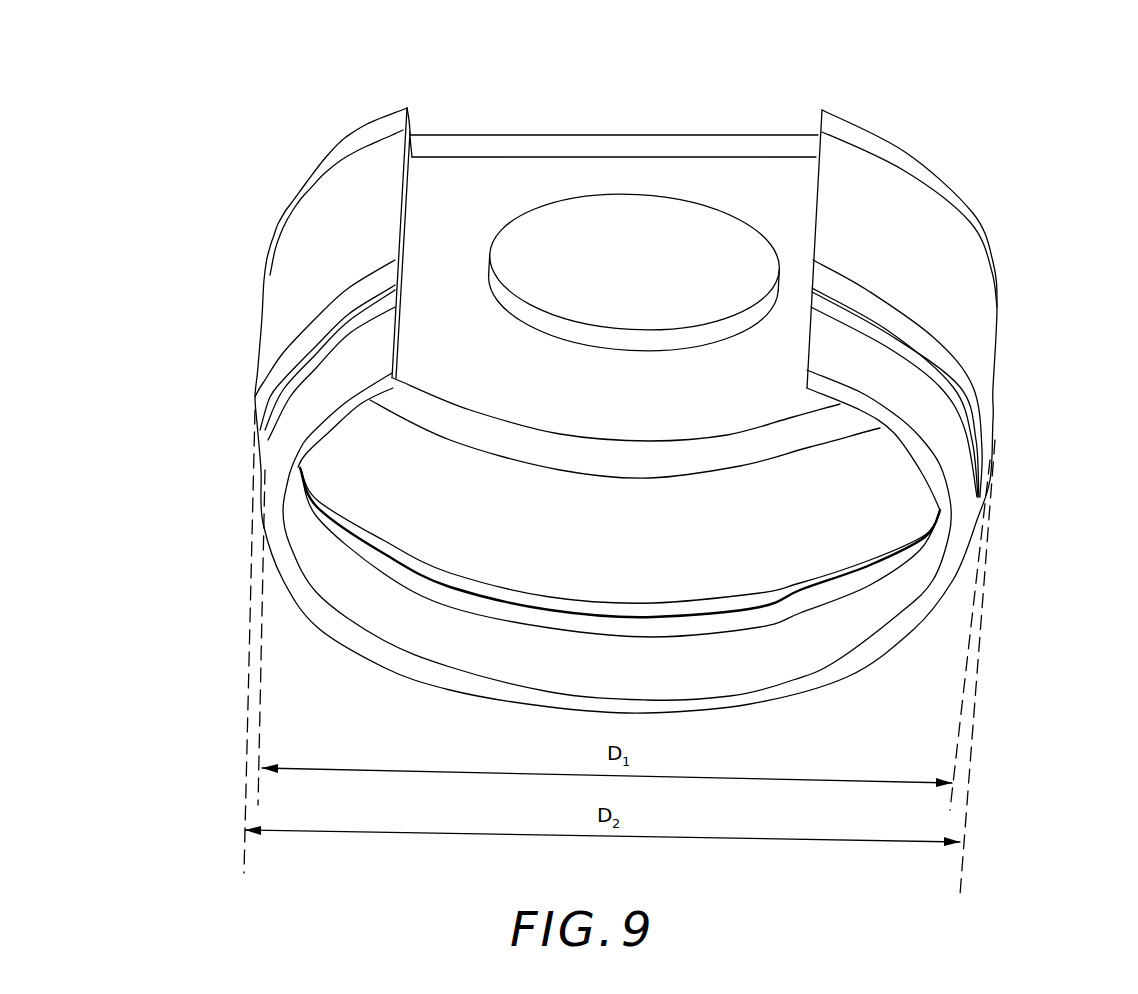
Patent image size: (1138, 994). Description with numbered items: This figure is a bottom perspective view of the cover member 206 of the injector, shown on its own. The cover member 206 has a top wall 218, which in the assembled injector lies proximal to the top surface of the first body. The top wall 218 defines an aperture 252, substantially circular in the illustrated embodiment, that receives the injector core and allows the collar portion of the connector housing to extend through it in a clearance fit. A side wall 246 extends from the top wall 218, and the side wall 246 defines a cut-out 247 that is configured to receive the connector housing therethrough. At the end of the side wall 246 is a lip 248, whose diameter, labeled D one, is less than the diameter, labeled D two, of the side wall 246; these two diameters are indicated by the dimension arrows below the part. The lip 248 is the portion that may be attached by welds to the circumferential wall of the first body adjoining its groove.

The cover member 206 is at (938, 155).
The top wall 218 is at (742, 148).
The side wall 246 is at (290, 258).
The cut-out 247 is at (482, 163).
The lip 248 is at (920, 410).
The aperture 252 is at (596, 256).